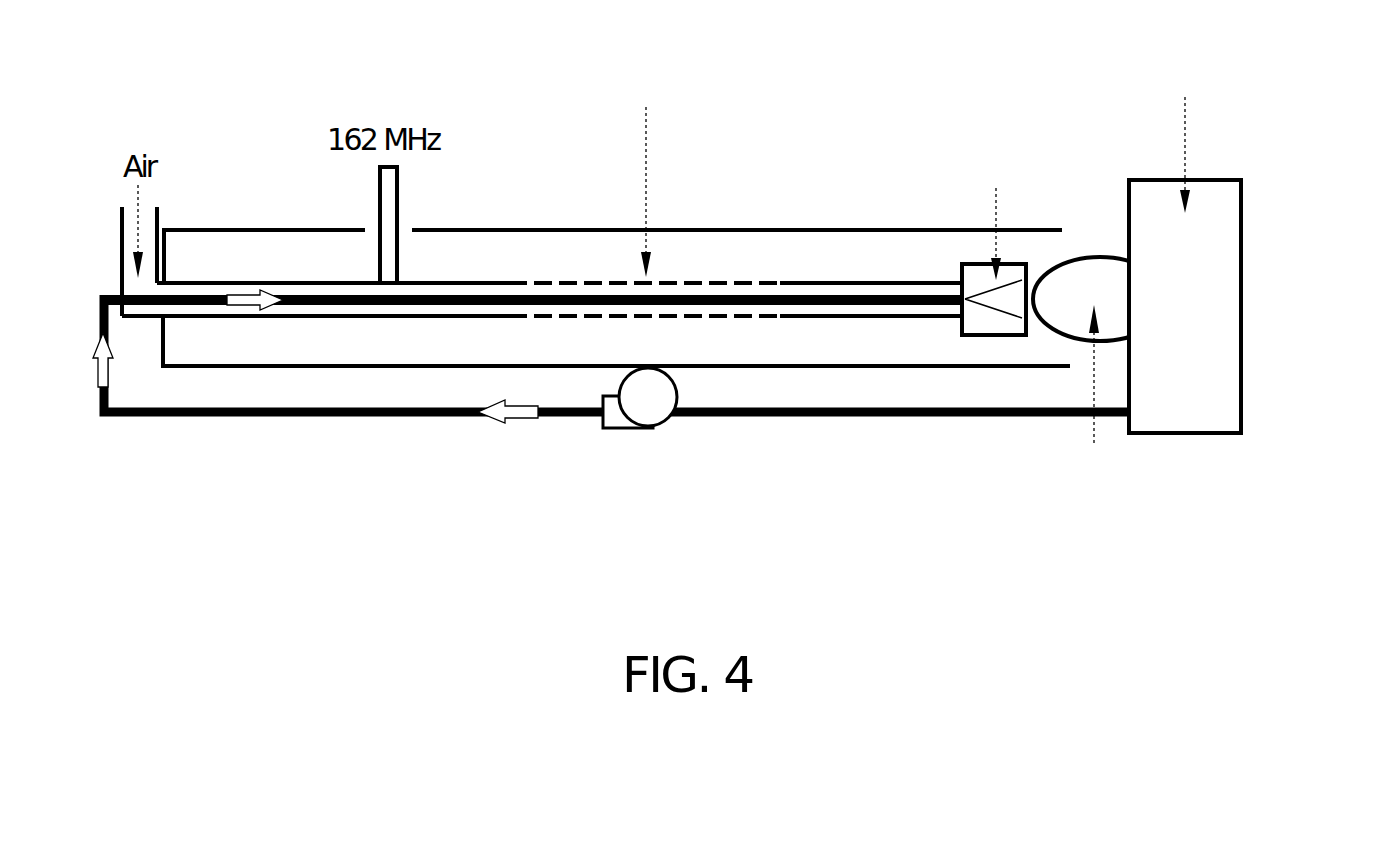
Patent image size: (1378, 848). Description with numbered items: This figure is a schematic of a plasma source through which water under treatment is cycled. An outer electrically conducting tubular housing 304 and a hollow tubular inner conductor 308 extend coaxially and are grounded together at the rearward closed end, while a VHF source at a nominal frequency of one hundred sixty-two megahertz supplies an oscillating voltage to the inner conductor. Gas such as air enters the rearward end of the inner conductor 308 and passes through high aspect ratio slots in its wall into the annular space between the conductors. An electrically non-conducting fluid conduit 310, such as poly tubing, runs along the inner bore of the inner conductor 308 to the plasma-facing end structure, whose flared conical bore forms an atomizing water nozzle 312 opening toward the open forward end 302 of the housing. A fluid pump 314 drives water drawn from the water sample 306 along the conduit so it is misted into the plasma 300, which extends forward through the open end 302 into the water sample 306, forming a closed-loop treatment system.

The plasma 300 is at (1083, 260).
The open forward end 302 is at (1079, 351).
The tubular housing 304 is at (753, 230).
The water sample 306 is at (1213, 178).
The inner conductor 308 is at (285, 283).
The fluid conduit 310 is at (433, 300).
The atomizing water nozzle 312 is at (1005, 313).
The fluid pump 314 is at (653, 428).